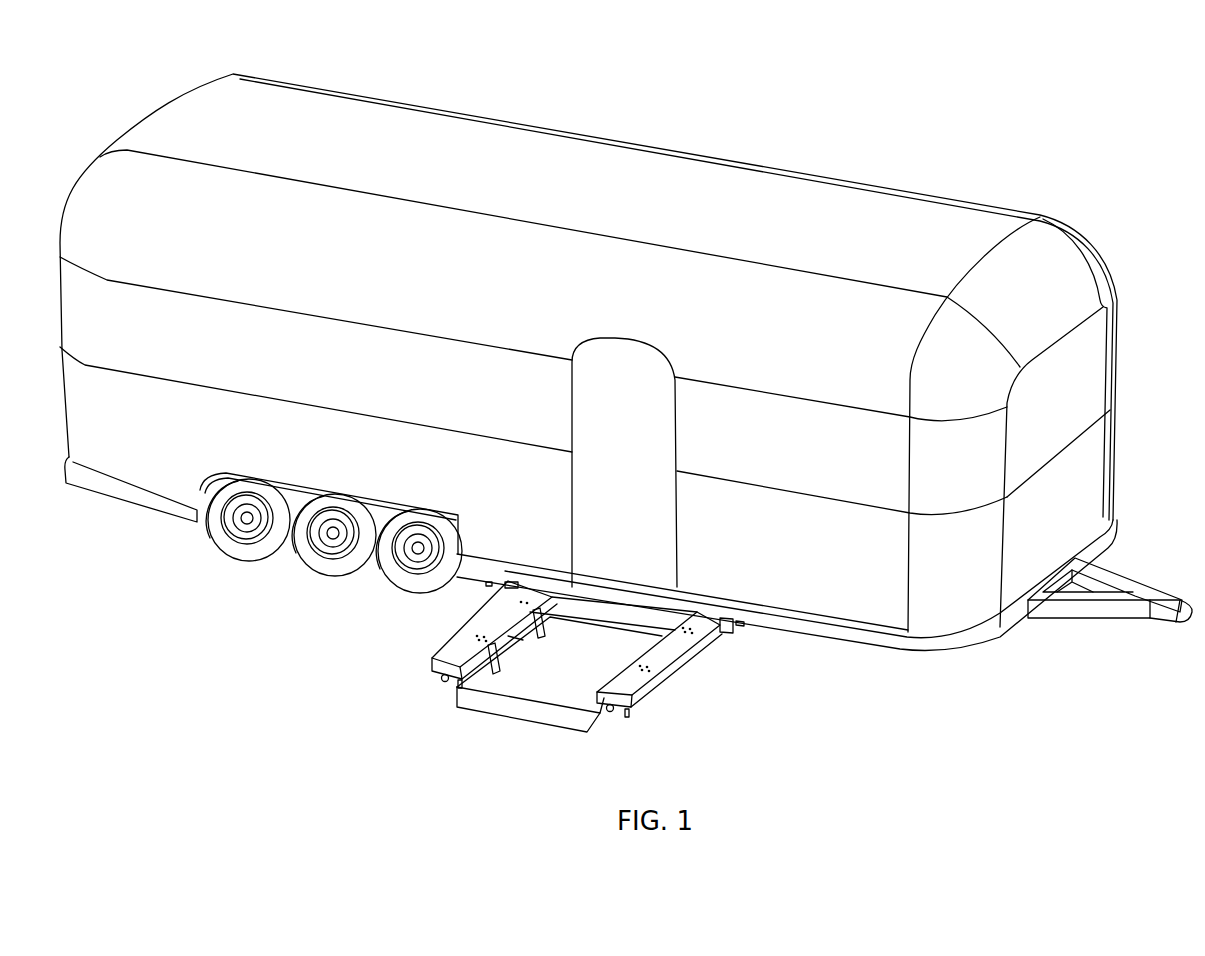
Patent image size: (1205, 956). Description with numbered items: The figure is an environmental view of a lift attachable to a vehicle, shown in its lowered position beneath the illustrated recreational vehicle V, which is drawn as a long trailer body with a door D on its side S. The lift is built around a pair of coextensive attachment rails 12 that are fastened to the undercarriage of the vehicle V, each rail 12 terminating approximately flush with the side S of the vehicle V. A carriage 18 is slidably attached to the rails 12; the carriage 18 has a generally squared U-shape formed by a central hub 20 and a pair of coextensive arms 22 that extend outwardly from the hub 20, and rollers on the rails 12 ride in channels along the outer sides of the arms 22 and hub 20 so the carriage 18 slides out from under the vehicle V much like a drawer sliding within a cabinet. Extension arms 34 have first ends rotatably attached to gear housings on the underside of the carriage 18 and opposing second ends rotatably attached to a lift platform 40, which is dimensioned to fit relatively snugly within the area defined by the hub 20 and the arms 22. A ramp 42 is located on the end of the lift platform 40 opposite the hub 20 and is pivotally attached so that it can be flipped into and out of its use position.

The vehicle V is at (853, 172).
The door D is at (605, 363).
The side of the vehicle S is at (878, 607).
The attachment rails 12 is at (724, 633).
The carriage 18 is at (652, 695).
The central hub 20 is at (577, 600).
The arms 22 is at (477, 625).
The extension arms 34 is at (494, 666).
The lift platform 40 is at (572, 688).
The ramp 42 is at (492, 705).